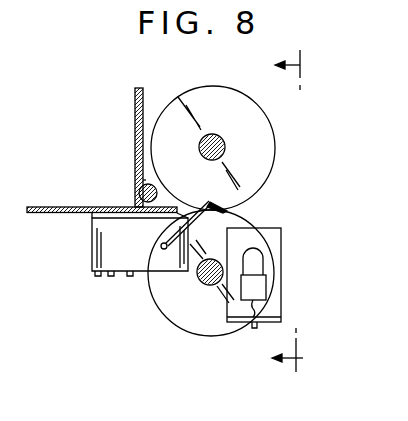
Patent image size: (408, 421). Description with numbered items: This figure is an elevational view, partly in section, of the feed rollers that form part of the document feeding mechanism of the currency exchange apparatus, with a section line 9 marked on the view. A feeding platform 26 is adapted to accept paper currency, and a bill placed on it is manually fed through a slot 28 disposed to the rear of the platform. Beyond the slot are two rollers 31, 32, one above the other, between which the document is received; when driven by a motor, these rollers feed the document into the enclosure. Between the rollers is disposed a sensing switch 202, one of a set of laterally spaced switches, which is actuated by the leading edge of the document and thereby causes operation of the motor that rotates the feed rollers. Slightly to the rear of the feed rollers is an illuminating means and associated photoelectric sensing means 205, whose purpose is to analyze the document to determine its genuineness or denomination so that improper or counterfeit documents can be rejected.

The section line 9- 9 is at (298, 211).
The feeding platform 26 is at (48, 207).
The slot 28 is at (134, 205).
The roller 31 is at (251, 134).
The roller 32 is at (203, 314).
The sensing switch 202 is at (148, 249).
The illuminating means and associated photoelectric sensing means 205 is at (263, 285).